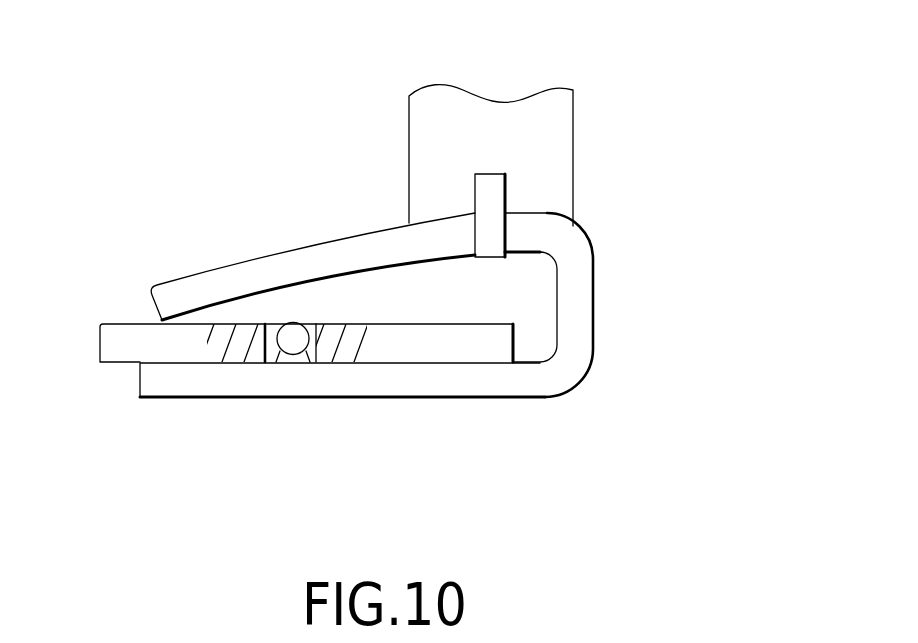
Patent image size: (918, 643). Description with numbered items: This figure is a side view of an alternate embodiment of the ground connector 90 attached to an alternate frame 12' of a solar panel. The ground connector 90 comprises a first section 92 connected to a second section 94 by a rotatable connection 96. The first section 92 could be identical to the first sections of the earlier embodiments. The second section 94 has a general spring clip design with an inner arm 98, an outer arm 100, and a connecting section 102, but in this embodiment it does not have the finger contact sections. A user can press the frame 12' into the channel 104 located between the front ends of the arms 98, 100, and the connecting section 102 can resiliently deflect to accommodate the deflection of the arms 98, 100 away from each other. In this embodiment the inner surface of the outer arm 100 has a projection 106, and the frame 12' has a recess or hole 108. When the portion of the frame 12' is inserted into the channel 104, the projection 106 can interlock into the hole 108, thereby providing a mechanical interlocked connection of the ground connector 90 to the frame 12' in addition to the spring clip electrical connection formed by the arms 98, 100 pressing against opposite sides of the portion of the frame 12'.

The ground connector 90 is at (704, 116).
The first section 92 is at (573, 100).
The rotatable connection 96 is at (475, 192).
The inner arm 98 is at (204, 286).
The channel 104 is at (505, 293).
The connecting section 102 is at (595, 323).
The second section 94 is at (387, 398).
The outer arm 100 is at (160, 398).
The frame 12' is at (288, 302).
The projection 106 is at (293, 340).
The recess or hole 108 is at (320, 350).